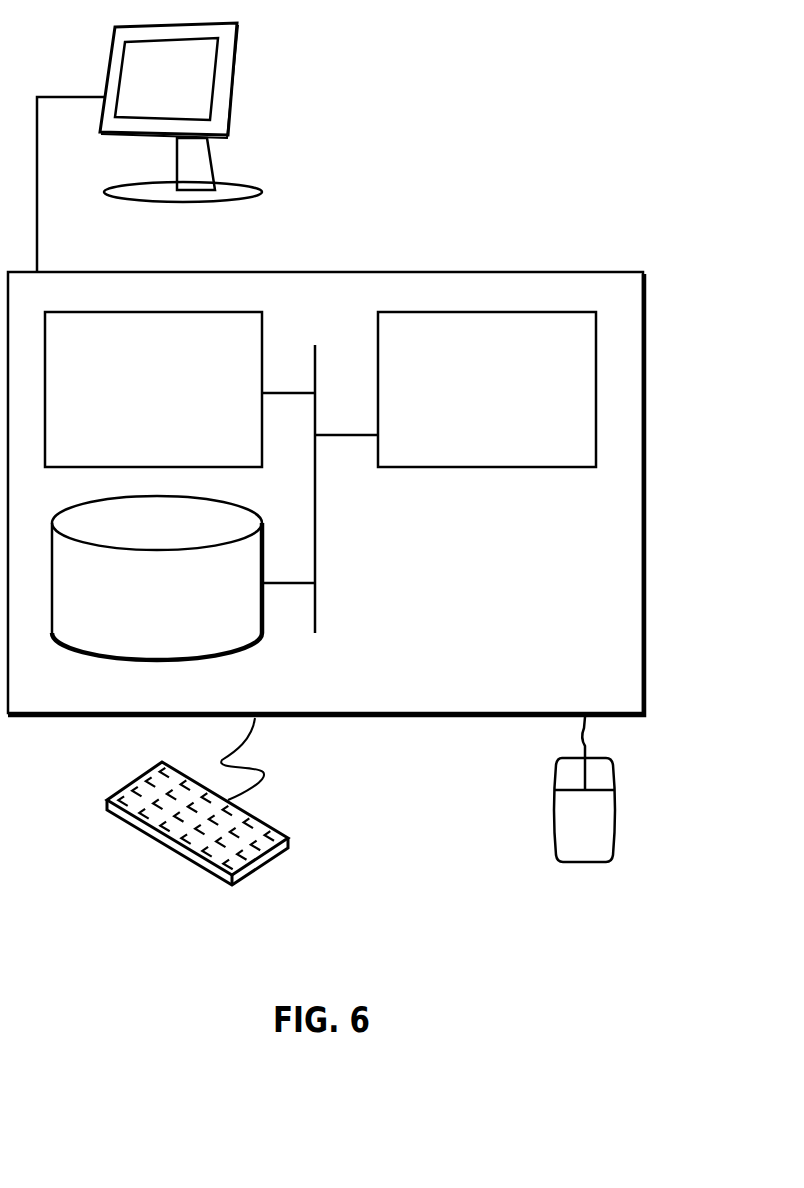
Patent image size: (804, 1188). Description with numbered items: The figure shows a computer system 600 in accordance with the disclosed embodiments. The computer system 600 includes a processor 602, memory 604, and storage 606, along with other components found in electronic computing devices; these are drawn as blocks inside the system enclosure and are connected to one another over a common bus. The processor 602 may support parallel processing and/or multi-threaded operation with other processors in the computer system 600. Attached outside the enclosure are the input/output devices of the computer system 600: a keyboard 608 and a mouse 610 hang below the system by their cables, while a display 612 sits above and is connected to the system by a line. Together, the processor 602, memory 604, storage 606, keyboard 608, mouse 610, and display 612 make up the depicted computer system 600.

The computer system 600 is at (368, 250).
The processor 602 is at (469, 403).
The memory 604 is at (132, 403).
The storage 606 is at (137, 610).
The keyboard 608 is at (123, 820).
The mouse 610 is at (563, 832).
The display 612 is at (149, 147).